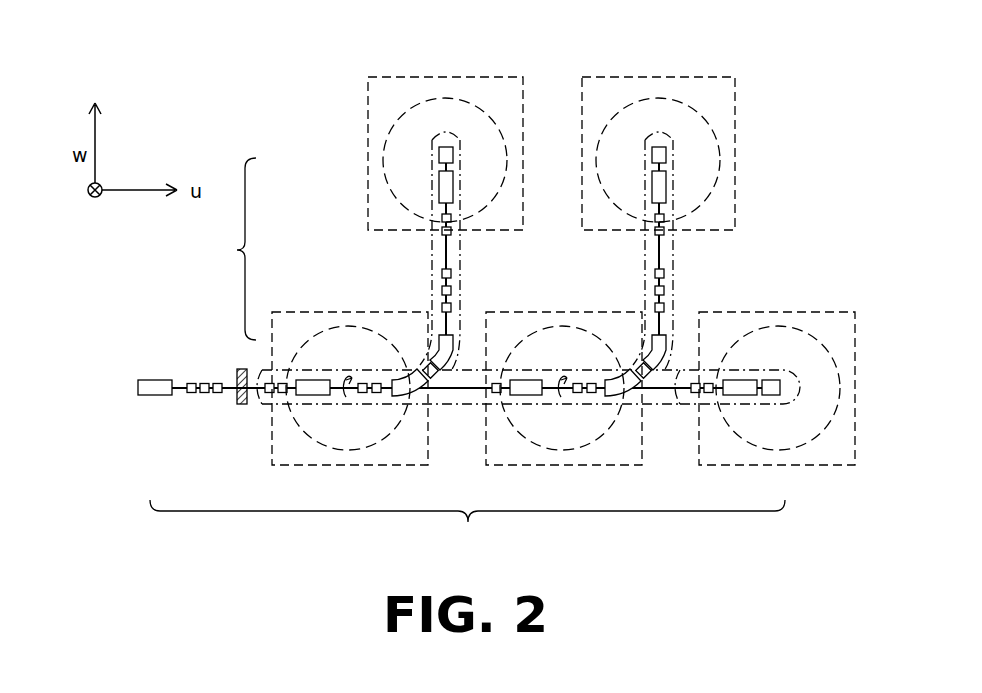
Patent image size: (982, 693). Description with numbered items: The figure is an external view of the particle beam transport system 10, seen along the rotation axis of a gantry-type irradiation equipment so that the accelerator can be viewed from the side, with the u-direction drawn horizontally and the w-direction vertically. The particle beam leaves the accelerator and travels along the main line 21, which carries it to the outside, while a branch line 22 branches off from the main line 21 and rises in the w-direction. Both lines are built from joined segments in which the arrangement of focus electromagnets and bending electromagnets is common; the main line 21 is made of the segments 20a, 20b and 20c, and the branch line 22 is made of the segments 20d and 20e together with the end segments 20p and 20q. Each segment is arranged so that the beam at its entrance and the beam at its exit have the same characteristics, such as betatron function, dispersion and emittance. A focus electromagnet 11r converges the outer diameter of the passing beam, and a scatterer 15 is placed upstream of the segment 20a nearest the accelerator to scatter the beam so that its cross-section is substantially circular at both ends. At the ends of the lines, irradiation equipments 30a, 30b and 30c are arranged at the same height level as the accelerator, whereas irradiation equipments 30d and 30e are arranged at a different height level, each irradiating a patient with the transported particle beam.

The particle beam transport system 10 is at (214, 134).
The focus electromagnet 11r is at (205, 396).
The scatterer 15 is at (240, 368).
The segment 20a is at (265, 404).
The segment 20b is at (478, 404).
The segment 20c is at (694, 404).
The segment 20d is at (462, 290).
The segment 20e is at (675, 290).
The segment 20p is at (462, 170).
The segment 20q is at (675, 170).
The main line 21 is at (467, 530).
The branch line 22 is at (222, 249).
The irradiation equipment 30a is at (378, 312).
The irradiation equipment 30b is at (578, 312).
The irradiation equipment 30c is at (800, 312).
The irradiation equipment 30d is at (487, 77).
The irradiation equipment 30e is at (691, 77).